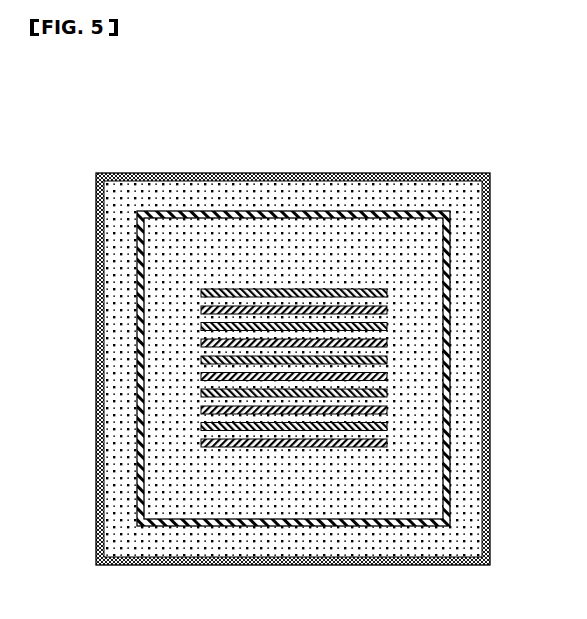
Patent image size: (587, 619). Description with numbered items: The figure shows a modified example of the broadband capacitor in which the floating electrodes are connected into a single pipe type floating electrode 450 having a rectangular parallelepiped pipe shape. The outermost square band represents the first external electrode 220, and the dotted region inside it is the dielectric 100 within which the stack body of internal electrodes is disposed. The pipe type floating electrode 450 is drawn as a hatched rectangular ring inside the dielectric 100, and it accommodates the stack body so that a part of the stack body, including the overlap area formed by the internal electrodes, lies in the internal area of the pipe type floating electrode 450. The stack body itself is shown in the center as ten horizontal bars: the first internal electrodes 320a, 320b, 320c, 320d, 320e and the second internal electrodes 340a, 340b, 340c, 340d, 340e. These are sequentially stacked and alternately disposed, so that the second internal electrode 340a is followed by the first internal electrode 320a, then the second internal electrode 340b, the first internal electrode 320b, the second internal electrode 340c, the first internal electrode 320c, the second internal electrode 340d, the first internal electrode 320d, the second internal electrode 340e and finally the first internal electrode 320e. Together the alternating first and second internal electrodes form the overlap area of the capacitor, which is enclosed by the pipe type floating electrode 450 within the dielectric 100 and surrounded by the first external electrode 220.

The dielectric 100 is at (282, 173).
The first external electrode 220 is at (437, 173).
The pipe type floating electrode 450 is at (450, 239).
The first internal electrode 320a is at (201, 310).
The first internal electrode 320b is at (201, 343).
The first internal electrode 320c is at (201, 376).
The first internal electrode 320d is at (201, 410).
The first internal electrode 320e is at (201, 443).
The second internal electrode 340a is at (387, 293).
The second internal electrode 340b is at (387, 326).
The second internal electrode 340c is at (387, 360).
The second internal electrode 340d is at (387, 393).
The second internal electrode 340e is at (387, 426).